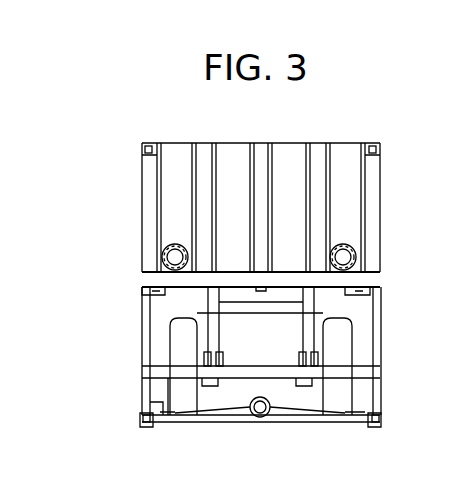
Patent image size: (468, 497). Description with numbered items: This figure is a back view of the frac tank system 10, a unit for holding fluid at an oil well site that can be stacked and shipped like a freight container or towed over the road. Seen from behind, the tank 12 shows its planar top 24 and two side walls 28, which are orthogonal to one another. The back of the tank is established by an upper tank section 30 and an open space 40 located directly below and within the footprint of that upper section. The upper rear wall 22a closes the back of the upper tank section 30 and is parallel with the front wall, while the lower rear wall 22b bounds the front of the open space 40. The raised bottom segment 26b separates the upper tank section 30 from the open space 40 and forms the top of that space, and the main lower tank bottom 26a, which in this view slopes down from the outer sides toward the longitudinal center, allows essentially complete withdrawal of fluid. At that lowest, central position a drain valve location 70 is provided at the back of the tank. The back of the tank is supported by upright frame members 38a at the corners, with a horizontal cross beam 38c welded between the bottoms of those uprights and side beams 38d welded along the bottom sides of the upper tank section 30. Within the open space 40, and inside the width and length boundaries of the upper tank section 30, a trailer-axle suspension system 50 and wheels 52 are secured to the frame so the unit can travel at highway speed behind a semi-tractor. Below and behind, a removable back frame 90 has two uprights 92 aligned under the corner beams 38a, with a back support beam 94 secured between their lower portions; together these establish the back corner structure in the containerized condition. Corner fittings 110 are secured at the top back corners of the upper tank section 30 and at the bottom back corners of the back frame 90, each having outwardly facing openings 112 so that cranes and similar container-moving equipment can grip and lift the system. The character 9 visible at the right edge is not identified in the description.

The frac tank system 10 is at (304, 134).
The tank 12 is at (180, 141).
The top 24 is at (232, 141).
The upper rear wall 22a is at (355, 223).
The lower rear wall 22b is at (163, 327).
The lower tank bottom 26a is at (232, 405).
The raised bottom segment 26b is at (383, 322).
The side walls 28 is at (143, 208).
The upper tank section 30 is at (350, 210).
The upright frame members 38a is at (150, 178).
The horizontal cross beam 38c is at (143, 242).
The side beams 38d is at (153, 290).
The open space 40 is at (362, 338).
The trailer-axle suspension system 50 is at (193, 402).
The wheels 52 is at (157, 371).
The drain valve location 70 is at (262, 417).
The back frame 90 is at (360, 433).
The uprights 92 is at (145, 355).
The column 9 is at (375, 352).
The back support beam 94 is at (293, 423).
The corner fittings 110 is at (150, 143).
The openings 112 is at (143, 147).